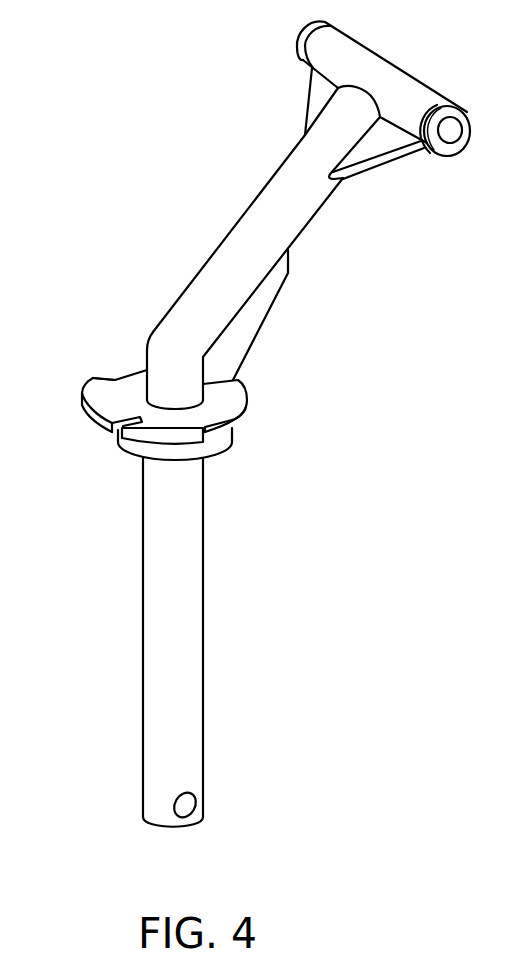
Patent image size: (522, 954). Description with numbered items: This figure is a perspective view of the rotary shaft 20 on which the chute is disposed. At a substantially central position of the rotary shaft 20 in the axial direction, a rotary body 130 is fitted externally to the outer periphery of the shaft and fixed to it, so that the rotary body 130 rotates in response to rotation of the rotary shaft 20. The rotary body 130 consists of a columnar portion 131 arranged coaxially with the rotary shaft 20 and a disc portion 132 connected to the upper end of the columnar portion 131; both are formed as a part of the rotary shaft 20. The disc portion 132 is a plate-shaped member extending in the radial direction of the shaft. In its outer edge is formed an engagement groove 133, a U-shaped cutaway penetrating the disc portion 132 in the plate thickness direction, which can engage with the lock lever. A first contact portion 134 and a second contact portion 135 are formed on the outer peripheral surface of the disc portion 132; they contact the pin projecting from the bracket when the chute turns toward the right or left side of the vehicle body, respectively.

The rotary shaft 20 is at (248, 232).
The rotary body 130 is at (232, 416).
The columnar portion 131 is at (222, 438).
The disc portion 132 is at (235, 393).
The engagement groove 133 is at (113, 437).
The first contact portion 134 is at (205, 438).
The second contact portion 135 is at (108, 377).